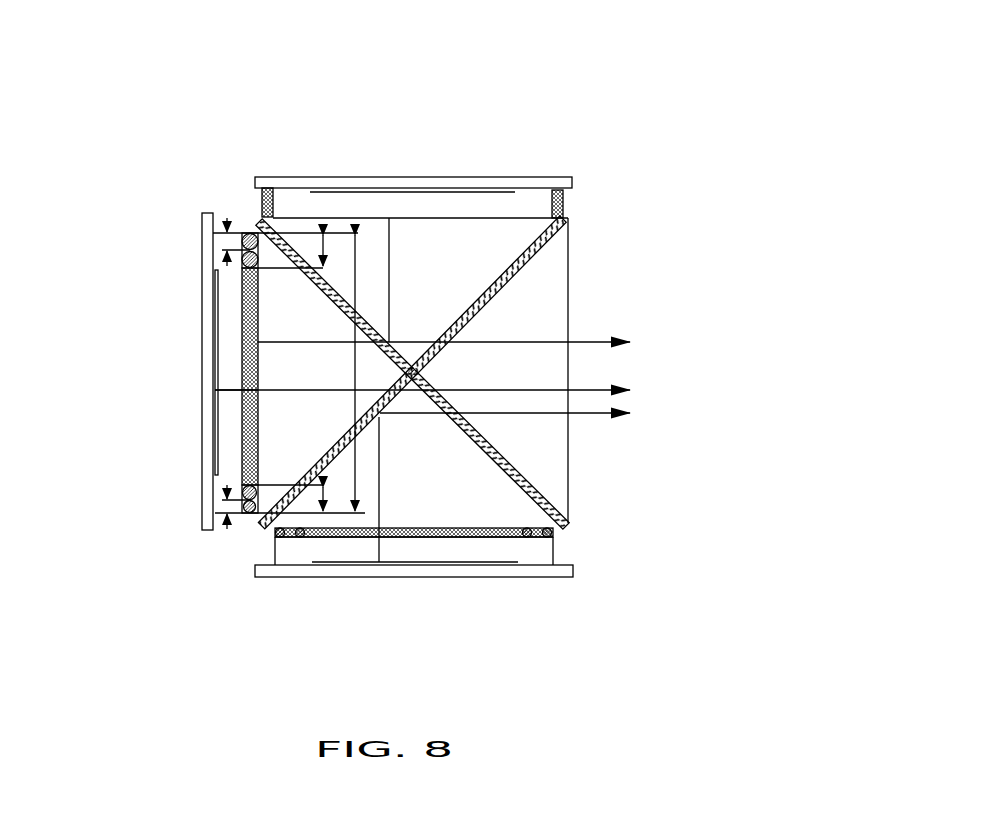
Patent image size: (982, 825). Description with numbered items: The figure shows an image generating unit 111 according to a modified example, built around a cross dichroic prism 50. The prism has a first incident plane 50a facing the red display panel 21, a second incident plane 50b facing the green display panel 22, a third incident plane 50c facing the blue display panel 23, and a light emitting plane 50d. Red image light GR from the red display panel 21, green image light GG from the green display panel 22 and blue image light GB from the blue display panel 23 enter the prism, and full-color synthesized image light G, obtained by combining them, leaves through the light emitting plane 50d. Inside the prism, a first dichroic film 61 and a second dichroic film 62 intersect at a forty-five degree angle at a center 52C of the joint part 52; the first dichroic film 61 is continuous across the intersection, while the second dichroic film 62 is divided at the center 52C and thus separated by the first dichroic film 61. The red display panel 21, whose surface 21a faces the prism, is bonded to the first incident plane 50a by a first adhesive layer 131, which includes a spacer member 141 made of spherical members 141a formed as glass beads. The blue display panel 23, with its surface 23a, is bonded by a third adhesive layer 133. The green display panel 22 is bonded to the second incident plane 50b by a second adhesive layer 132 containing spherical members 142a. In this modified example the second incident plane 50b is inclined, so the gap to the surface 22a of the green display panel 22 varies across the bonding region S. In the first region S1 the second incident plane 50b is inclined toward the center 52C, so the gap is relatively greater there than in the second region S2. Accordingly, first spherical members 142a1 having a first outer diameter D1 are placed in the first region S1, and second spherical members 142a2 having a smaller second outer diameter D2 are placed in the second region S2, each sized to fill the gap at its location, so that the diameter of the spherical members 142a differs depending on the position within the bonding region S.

The image generating unit 111 is at (557, 109).
The blue display panel 23 is at (508, 175).
The surface of second substrate 23a is at (301, 218).
The third adhesive layer 133 is at (252, 189).
The red display panel 21 is at (256, 585).
The surface of first substrate 21a is at (482, 563).
The first adhesive layer 131 is at (430, 540).
The spacer member 141 is at (362, 580).
The spherical members 141a is at (276, 535).
The green display panel 22 is at (195, 212).
The surface of the green display panel 22a is at (216, 446).
The second adhesive layer 132 is at (243, 405).
The cross dichroic prism 50 is at (576, 510).
The first incident plane 50a is at (362, 539).
The second incident plane 50b is at (243, 318).
The third incident plane 50c is at (365, 219).
The light emitting plane 50d is at (569, 290).
The first dichroic film 61 is at (534, 264).
The second dichroic film 62 is at (518, 463).
The joint part 52 is at (457, 226).
The center of the joint part 52C is at (413, 365).
The spherical members 142a is at (143, 391).
The first spherical members 142a1 is at (243, 262).
The second spherical members 142a2 is at (243, 513).
The first outer diameter D1 is at (224, 240).
The second outer diameter D2 is at (224, 507).
The first region S1 is at (325, 246).
The second region S2 is at (325, 520).
The bonding region S is at (357, 290).
The synthesized image light G is at (480, 472).
The red image light GR is at (605, 417).
The green image light GG is at (620, 393).
The blue image light GB is at (625, 348).